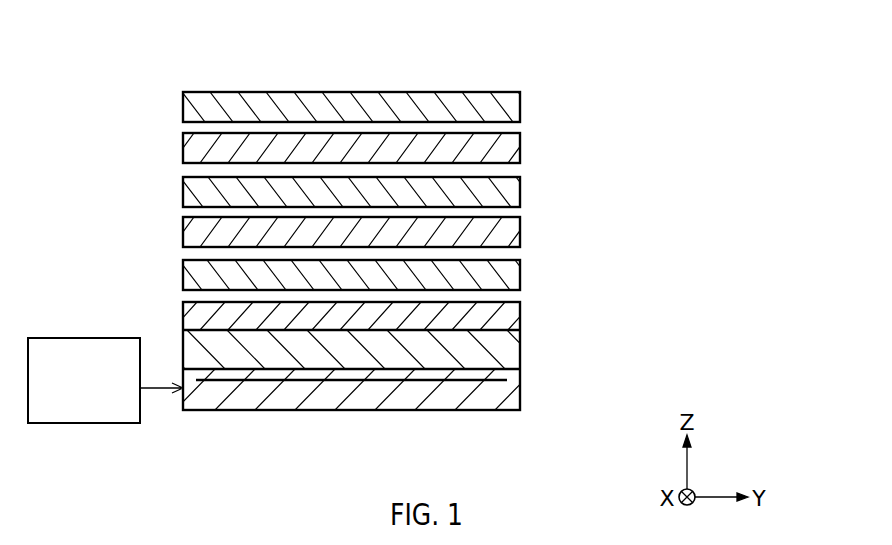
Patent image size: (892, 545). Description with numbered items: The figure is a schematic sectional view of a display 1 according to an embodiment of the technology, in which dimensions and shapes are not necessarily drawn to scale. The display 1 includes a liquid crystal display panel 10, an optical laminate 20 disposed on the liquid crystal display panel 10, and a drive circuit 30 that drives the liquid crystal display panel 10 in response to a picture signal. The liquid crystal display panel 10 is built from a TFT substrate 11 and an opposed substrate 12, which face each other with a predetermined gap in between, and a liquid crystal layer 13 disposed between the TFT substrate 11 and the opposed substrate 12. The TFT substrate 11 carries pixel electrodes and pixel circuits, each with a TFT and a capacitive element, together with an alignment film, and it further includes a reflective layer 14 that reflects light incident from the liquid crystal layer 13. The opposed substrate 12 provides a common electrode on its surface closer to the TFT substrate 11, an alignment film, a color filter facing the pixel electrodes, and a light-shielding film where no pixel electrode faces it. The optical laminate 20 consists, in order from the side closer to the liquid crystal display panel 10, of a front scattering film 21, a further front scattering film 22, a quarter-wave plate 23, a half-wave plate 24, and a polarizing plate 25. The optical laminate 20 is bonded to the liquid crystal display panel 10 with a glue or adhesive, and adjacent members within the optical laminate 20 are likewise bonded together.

The display 1 is at (494, 78).
The liquid crystal display panel 10 is at (598, 300).
The TFT substrate 11 is at (511, 392).
The opposed substrate 12 is at (511, 318).
The liquid crystal layer 13 is at (511, 350).
The reflective layer 14 is at (387, 382).
The optical laminate 20 is at (598, 92).
The front scattering film 21 is at (511, 275).
The front scattering film 22 is at (511, 232).
The λ/4 plate 23 is at (511, 190).
The λ/2 plate 24 is at (511, 148).
The polarizing plate 25 is at (511, 105).
The drive circuit 30 is at (89, 338).